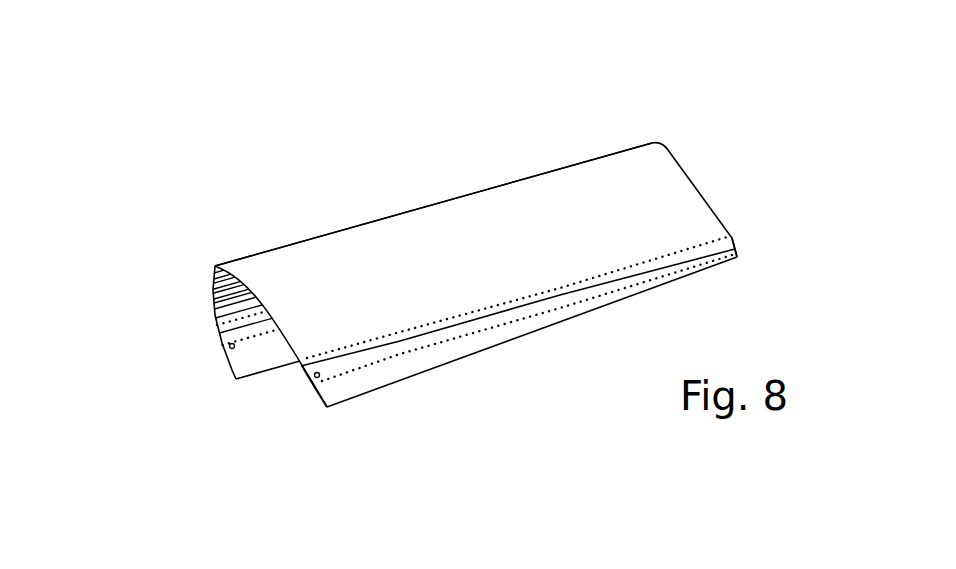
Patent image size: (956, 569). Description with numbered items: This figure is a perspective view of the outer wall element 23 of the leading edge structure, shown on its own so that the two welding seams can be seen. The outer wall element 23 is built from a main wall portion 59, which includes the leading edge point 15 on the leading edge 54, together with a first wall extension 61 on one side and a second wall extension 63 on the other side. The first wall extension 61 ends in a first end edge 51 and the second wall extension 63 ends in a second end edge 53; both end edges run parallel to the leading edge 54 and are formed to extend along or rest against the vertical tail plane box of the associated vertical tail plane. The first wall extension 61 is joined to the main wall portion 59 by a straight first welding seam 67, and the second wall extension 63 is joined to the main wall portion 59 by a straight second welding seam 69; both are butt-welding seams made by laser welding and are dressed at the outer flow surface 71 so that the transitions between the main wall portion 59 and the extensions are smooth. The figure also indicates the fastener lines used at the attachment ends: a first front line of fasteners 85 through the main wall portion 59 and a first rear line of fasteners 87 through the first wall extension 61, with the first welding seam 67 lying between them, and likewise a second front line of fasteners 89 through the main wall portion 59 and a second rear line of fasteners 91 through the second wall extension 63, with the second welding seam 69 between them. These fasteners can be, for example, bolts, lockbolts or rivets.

The outer wall element 23 is at (621, 106).
The leading edge 54 is at (433, 202).
The leading edge point 15 is at (370, 221).
The main wall portion 59 is at (527, 241).
The second front line of fasteners 89 is at (732, 238).
The second rear line of fasteners 91 is at (735, 249).
The second welding seam 69 is at (461, 323).
The second wall extension 63 is at (347, 392).
The second end edge 53 is at (405, 380).
The outer flow surface 71 is at (321, 392).
The first end edge 51 is at (266, 378).
The first wall extension 61 is at (230, 370).
The first rear line of fasteners 87 is at (224, 353).
The first front line of fasteners 85 is at (218, 340).
The first welding seam 67 is at (217, 310).